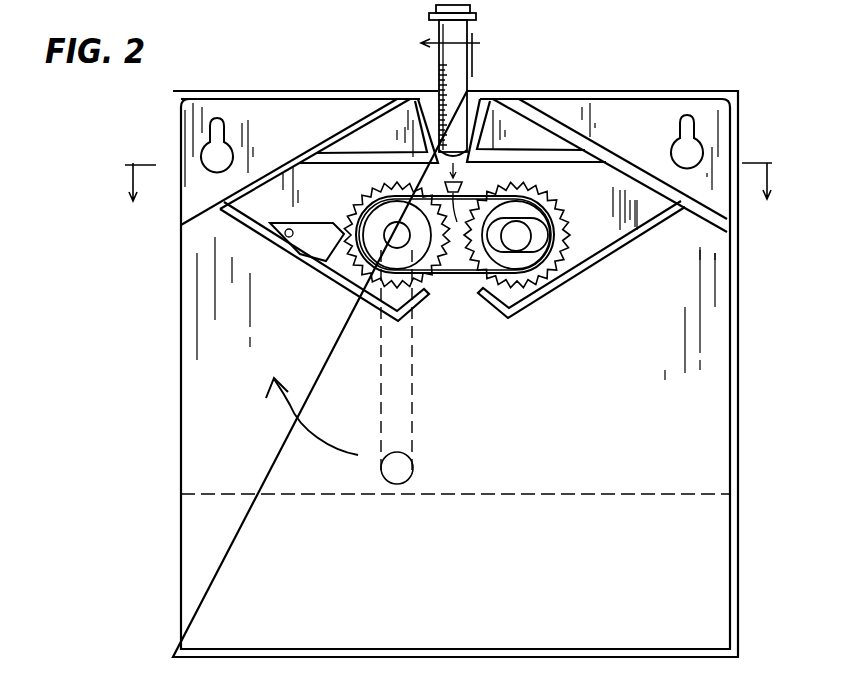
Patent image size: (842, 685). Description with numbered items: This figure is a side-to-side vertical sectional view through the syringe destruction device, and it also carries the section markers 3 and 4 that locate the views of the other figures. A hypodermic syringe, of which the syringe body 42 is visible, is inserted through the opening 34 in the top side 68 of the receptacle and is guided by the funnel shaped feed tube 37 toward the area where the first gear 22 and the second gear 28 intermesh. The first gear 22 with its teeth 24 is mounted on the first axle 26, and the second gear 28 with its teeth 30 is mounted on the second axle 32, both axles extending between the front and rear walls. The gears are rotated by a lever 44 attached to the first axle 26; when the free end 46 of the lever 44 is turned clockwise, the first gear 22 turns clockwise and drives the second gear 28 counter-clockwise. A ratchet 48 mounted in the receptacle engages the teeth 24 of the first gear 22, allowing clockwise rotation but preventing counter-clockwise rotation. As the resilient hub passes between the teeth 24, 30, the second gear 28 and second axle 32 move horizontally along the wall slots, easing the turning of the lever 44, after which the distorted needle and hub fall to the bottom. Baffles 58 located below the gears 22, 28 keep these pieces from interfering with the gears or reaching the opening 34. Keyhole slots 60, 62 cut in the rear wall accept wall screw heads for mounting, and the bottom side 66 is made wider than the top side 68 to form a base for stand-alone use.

The section line 3- 3 is at (448, 170).
The section line 4- 4 is at (458, 54).
The first gear 22 is at (348, 259).
The teeth 24 is at (352, 222).
The first axle 26 is at (391, 233).
The second gear 28 is at (560, 249).
The teeth 30 is at (560, 225).
The second axle 32 is at (519, 240).
The opening 34 is at (470, 100).
The funnel shaped feed tube 37 is at (488, 105).
The syringe body 42 is at (438, 63).
The lever 44 is at (397, 379).
The free end 46 is at (400, 464).
The ratchet 48 is at (310, 223).
The baffles 58 is at (298, 258).
The keyhole slot 60 is at (224, 126).
The keyhole slot 62 is at (688, 122).
The bottom side 66 is at (603, 658).
The top side 68 is at (640, 92).